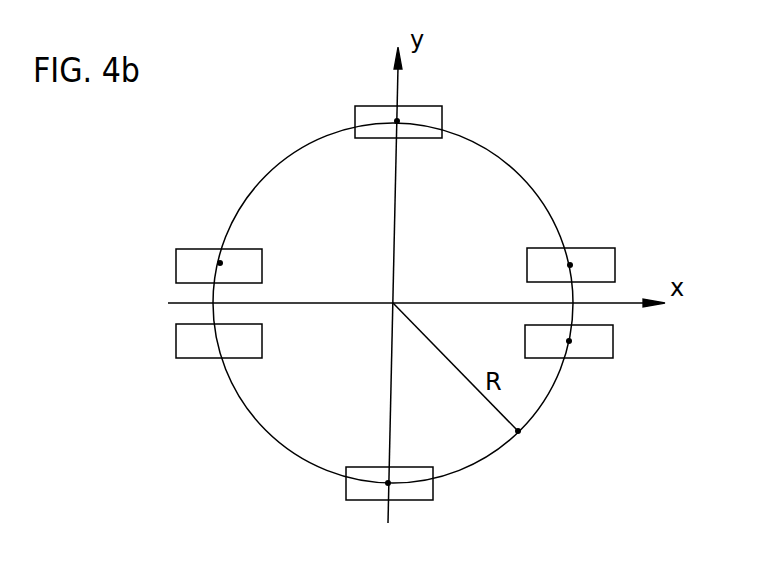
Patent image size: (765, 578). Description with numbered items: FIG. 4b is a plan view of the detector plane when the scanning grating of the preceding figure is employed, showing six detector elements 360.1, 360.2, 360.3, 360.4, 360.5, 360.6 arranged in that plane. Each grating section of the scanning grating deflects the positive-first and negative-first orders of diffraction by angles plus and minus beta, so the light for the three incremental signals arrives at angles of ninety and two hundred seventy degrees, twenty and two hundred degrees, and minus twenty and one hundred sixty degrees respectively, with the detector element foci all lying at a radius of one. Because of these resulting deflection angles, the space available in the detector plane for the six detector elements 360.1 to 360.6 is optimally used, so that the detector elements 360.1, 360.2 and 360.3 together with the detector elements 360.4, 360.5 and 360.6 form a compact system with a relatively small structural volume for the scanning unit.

The detector element 360.1 is at (428, 108).
The detector element 360.2 is at (578, 250).
The detector element 360.3 is at (215, 250).
The detector element 360.4 is at (365, 490).
The detector element 360.5 is at (208, 355).
The detector element 360.6 is at (573, 355).